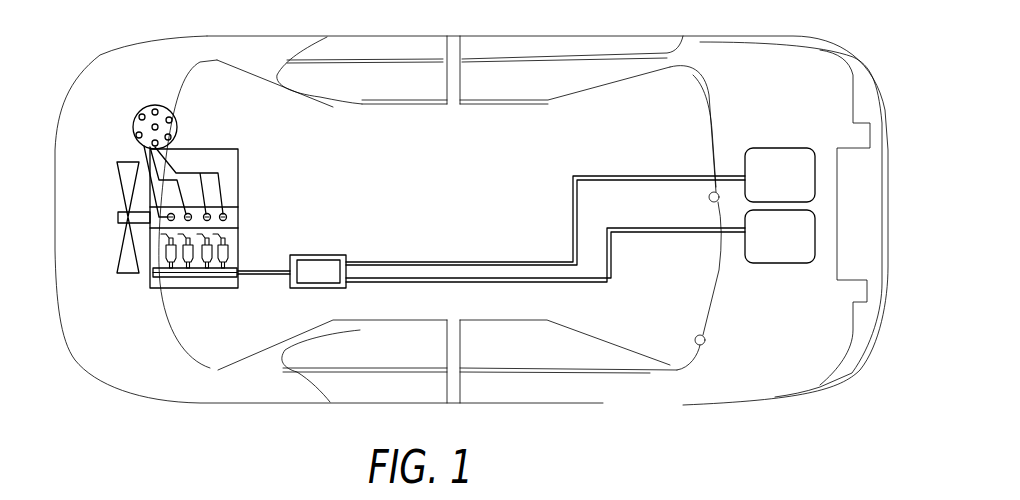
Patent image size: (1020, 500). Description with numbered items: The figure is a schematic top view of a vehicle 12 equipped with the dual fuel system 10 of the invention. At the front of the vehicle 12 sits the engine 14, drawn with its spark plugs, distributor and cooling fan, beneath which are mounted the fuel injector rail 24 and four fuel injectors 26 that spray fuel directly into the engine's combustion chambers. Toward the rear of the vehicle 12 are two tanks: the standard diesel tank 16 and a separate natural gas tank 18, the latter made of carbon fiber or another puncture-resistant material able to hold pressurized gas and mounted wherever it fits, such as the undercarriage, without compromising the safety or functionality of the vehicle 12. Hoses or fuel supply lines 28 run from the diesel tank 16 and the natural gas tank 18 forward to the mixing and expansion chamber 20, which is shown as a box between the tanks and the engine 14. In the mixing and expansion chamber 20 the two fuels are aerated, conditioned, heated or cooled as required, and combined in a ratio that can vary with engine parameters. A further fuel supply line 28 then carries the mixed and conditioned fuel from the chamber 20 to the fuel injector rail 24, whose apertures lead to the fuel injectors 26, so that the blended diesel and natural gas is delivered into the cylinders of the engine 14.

The dual fuel system 10 is at (693, 428).
The vehicle 12 is at (723, 63).
The engine 14 is at (157, 278).
The diesel tank 16 is at (773, 165).
The natural gas tank 18 is at (800, 250).
The mixing and expansion chamber 20 is at (327, 268).
The fuel injector rail 24 is at (177, 273).
The fuel injectors 26 is at (163, 235).
The fuel supply lines 28 is at (268, 271).